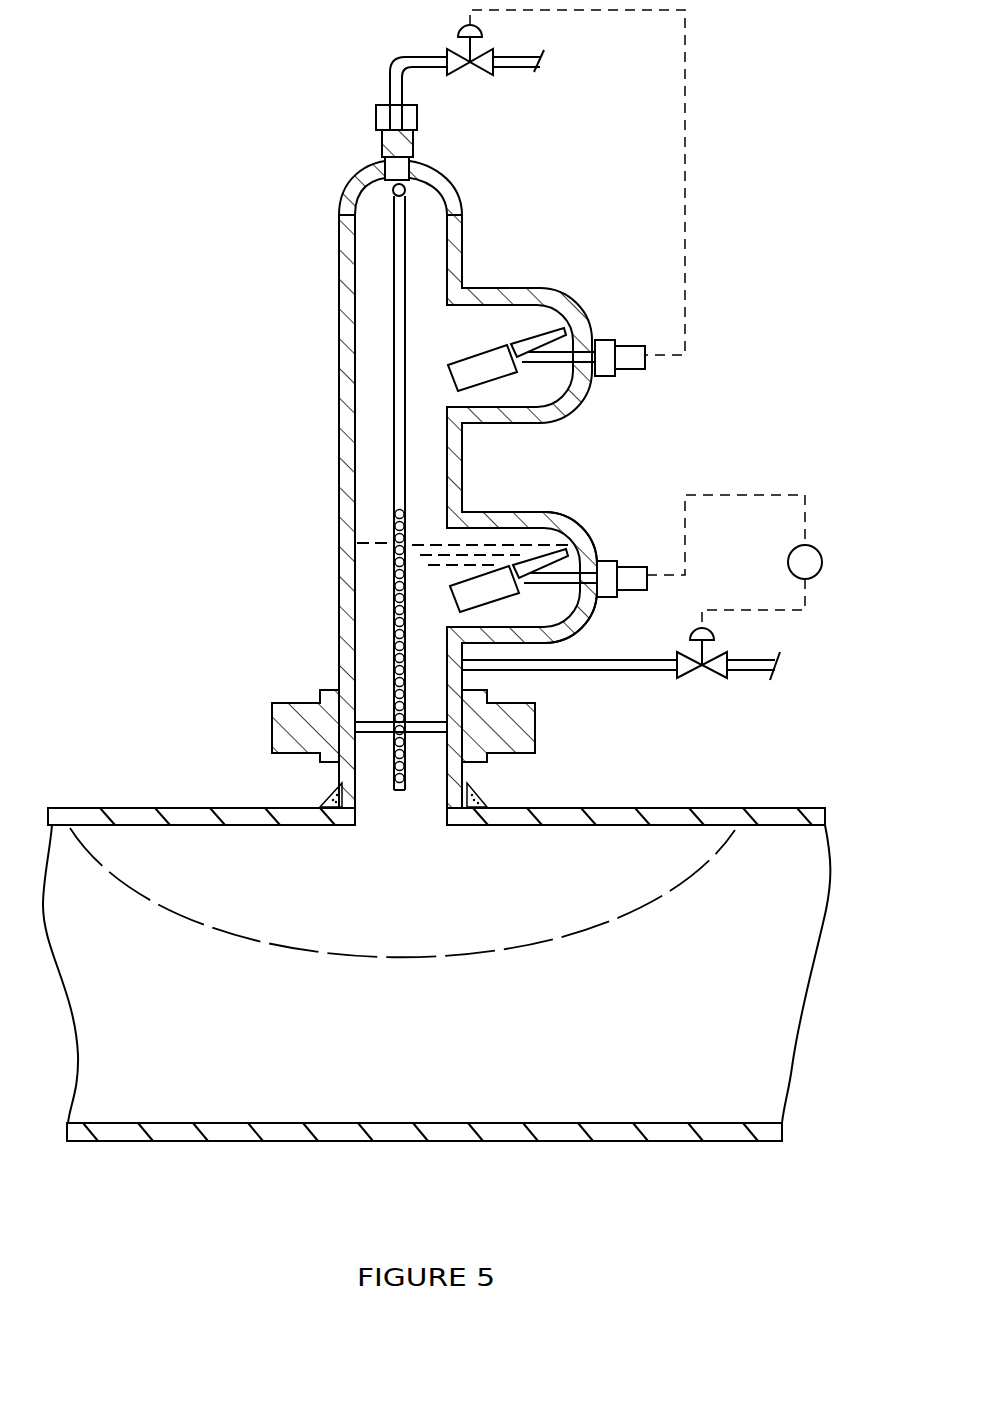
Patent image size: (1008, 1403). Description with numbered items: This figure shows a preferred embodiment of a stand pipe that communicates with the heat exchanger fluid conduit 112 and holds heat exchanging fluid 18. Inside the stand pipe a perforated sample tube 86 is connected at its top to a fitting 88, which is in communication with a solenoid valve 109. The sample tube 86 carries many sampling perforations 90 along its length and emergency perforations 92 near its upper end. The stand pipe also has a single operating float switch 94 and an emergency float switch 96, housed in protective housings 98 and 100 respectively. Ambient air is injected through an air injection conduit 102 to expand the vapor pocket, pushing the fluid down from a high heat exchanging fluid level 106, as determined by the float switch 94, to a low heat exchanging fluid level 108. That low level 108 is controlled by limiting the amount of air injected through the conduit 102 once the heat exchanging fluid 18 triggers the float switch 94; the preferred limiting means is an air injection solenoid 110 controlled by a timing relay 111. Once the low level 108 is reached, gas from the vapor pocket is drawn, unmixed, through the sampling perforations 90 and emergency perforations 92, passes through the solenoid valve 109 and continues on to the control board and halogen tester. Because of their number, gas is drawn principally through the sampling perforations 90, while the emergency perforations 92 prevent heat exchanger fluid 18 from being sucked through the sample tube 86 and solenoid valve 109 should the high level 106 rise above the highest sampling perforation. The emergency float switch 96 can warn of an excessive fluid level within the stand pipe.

The heat exchanging fluid 18 is at (780, 934).
The perforated sample tube 86 is at (394, 262).
The fitting 88 is at (378, 106).
The sampling perforations 90 is at (395, 511).
The emergency perforations 92 is at (392, 192).
The operating float switch 94 is at (614, 560).
The emergency float switch 96 is at (632, 346).
The protective housing 98 is at (492, 512).
The protective housing 100 is at (503, 288).
The air injection conduit 102 is at (765, 672).
The high heat exchanging fluid level 106 is at (387, 542).
The low heat exchanging fluid level 108 is at (420, 960).
The solenoid valve 109 is at (487, 76).
The air injection solenoid 110 is at (683, 678).
The timing relay 111 is at (825, 548).
The heat exchanger fluid conduit 112 is at (660, 1142).